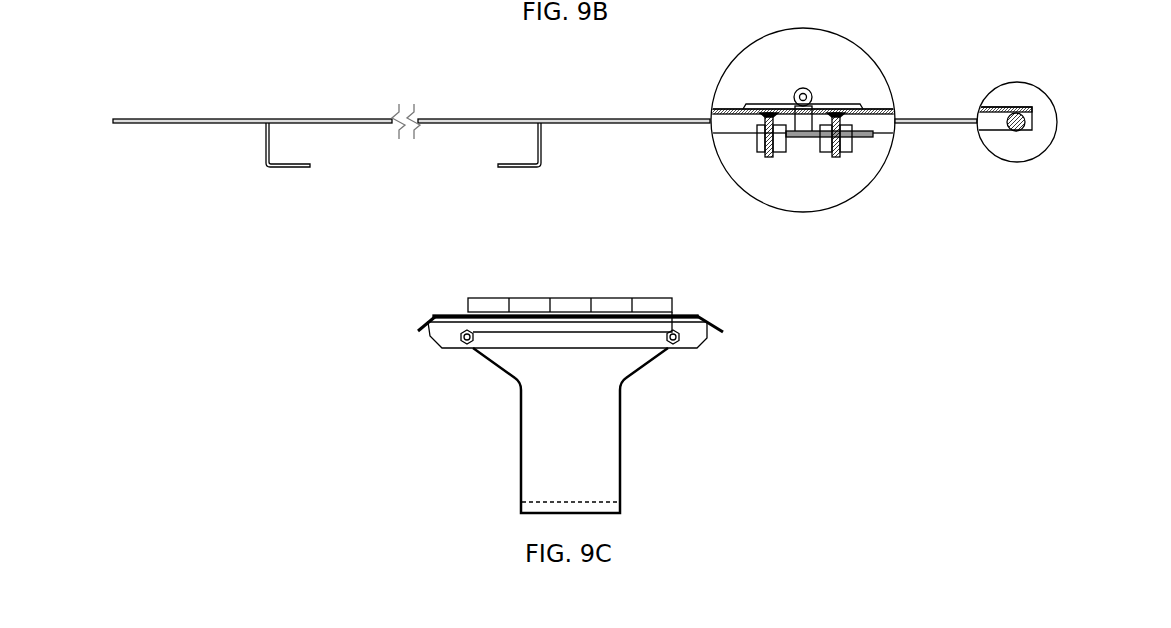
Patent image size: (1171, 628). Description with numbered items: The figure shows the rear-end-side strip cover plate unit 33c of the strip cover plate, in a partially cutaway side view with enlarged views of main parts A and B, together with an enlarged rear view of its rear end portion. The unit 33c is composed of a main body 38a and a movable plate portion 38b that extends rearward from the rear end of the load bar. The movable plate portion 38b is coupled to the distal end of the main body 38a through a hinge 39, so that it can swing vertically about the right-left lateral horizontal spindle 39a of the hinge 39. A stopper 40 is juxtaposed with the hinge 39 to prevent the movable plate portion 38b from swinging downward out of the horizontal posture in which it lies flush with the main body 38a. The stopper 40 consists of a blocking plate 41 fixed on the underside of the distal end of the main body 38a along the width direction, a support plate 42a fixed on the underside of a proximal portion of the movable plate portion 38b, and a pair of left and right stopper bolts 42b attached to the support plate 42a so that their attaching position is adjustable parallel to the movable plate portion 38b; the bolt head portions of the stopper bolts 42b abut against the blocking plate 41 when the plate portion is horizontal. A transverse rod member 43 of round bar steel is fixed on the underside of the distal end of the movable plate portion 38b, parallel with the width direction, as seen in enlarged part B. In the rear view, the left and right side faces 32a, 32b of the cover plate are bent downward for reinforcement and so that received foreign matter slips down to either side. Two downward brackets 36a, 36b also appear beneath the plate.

In FIG. 9B, the main body 38a is at (263, 118).
In FIG. 9B, the movable plate portion 38b is at (986, 106).
In FIG. 9C, the movable plate portion 38b is at (613, 316).
In FIG. 9B, the rear-end-side strip cover plate unit 33c is at (453, 116).
In FIG. 9C, the rear-end-side strip cover plate unit 33c is at (448, 311).
In FIG. 9B, the first bracket 36a is at (266, 145).
In FIG. 9B, the second bracket 36b is at (541, 145).
In FIG. 9C, the second bracket 36b is at (600, 457).
In FIG. 9B, the hinge 39 is at (806, 91).
In FIG. 9C, the hinge 39 is at (522, 298).
In FIG. 9B, the horizontal spindle 39a is at (795, 100).
In FIG. 9B, the stopper 40 is at (777, 170).
In FIG. 9B, the blocking plate 41 is at (764, 145).
In FIG. 9B, the support plate 42a is at (837, 158).
In FIG. 9C, the support plate 42a is at (545, 348).
In FIG. 9B, the stopper bolts 42b is at (804, 137).
In FIG. 9C, the stopper bolts 42b is at (462, 343).
In FIG. 9B, the transverse rod member 43 is at (1026, 128).
In FIG. 9C, the transverse rod member 43 is at (597, 333).
In FIG. 9C, the left side face 32a is at (433, 320).
In FIG. 9C, the right side face 32b is at (717, 310).
In FIG. 9B, the main part A is at (842, 207).
In FIG. 9B, the main part B is at (1020, 162).